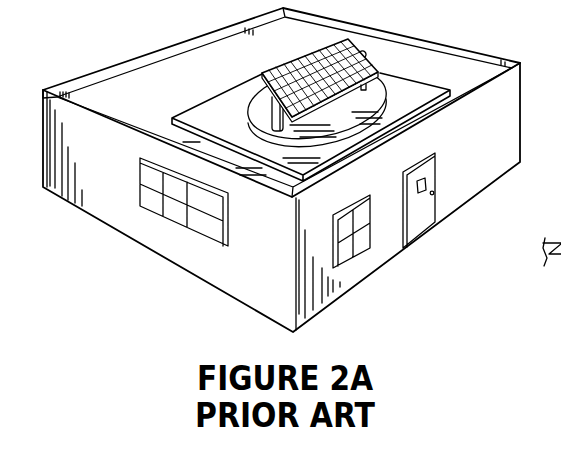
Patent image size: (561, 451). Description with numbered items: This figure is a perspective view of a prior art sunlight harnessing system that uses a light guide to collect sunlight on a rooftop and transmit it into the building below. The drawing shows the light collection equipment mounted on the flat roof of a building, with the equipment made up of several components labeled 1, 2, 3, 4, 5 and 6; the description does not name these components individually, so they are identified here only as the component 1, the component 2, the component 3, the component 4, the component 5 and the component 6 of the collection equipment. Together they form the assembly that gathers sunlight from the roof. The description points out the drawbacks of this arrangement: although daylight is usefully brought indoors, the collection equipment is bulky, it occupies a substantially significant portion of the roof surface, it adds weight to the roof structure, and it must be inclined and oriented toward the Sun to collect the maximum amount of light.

The solar panel 1 is at (305, 57).
The panel mounting frame 2 is at (290, 78).
The support post 3 is at (268, 106).
The light sensor 4 is at (364, 53).
The rotating base 5 is at (340, 140).
The mounting platform 6 is at (440, 84).